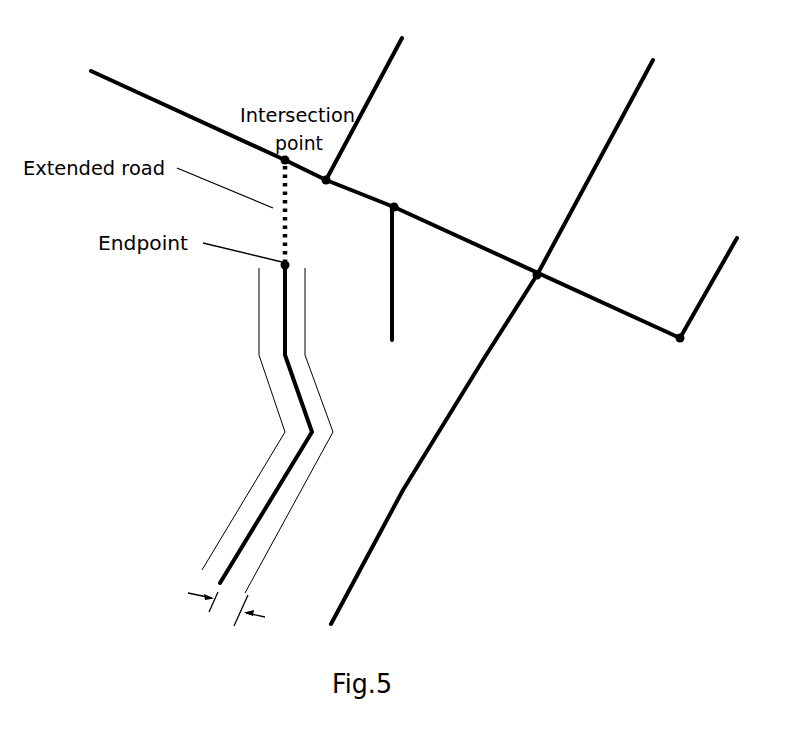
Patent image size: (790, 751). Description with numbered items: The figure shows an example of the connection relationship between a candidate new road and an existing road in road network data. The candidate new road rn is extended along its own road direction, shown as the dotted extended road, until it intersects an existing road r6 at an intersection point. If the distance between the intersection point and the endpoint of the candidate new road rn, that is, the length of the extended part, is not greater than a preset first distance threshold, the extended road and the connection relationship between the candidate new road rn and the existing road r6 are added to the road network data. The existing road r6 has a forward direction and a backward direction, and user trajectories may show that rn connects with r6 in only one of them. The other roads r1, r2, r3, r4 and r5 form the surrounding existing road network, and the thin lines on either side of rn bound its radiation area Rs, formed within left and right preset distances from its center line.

The road r1 is at (492, 342).
The road r2 is at (537, 272).
The road r3 is at (404, 273).
The road r4 is at (360, 188).
The road r5 is at (364, 109).
The existing road r6 is at (188, 115).
The candidate new road rn is at (303, 418).
The search radius buffer Rs is at (262, 543).